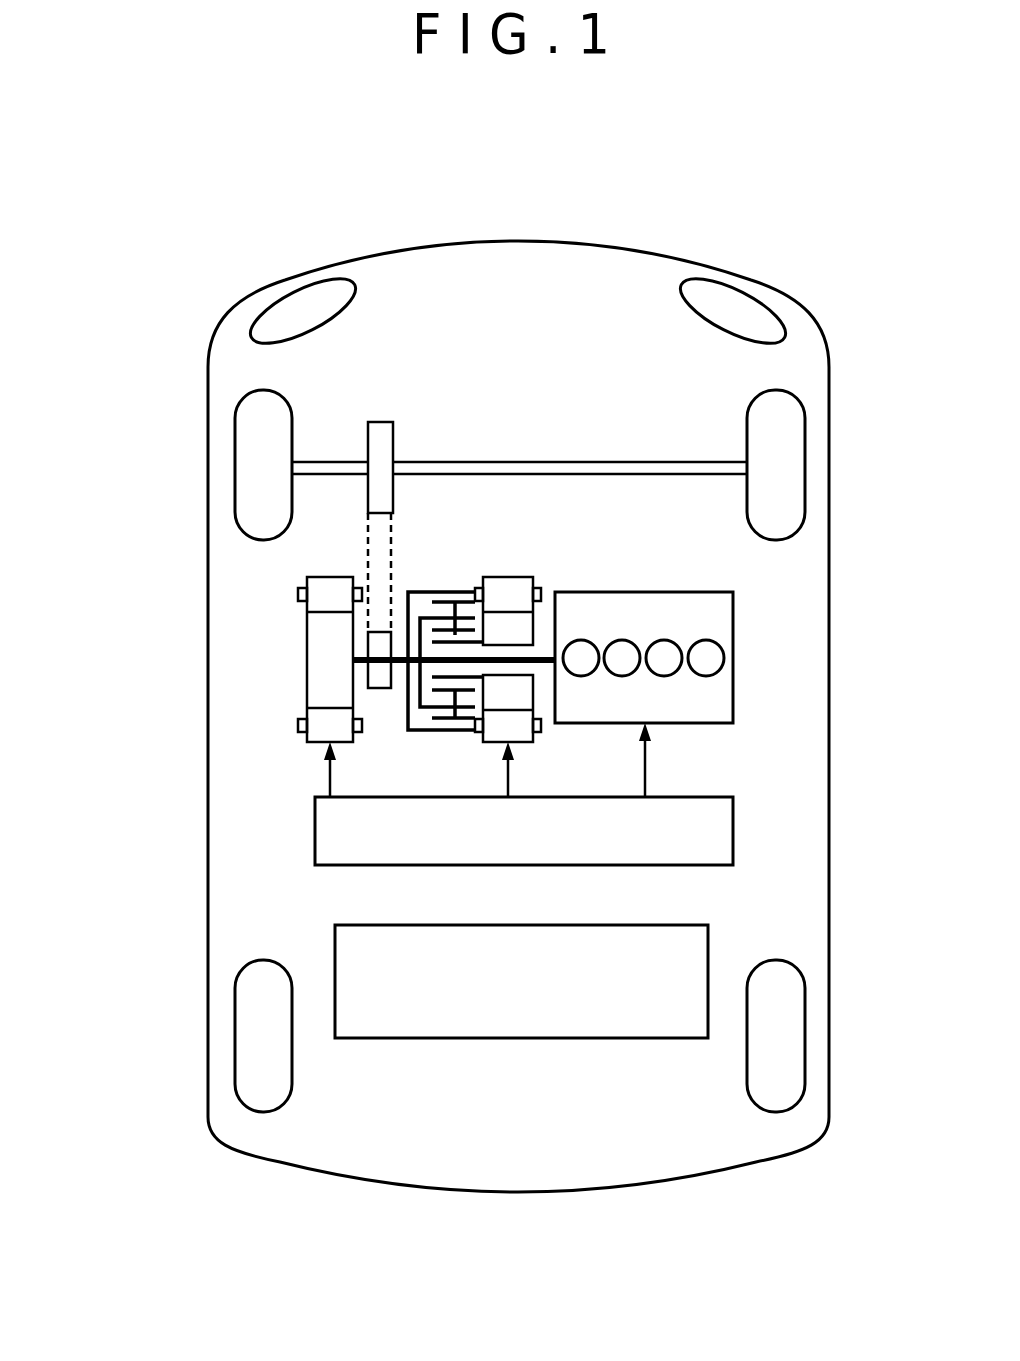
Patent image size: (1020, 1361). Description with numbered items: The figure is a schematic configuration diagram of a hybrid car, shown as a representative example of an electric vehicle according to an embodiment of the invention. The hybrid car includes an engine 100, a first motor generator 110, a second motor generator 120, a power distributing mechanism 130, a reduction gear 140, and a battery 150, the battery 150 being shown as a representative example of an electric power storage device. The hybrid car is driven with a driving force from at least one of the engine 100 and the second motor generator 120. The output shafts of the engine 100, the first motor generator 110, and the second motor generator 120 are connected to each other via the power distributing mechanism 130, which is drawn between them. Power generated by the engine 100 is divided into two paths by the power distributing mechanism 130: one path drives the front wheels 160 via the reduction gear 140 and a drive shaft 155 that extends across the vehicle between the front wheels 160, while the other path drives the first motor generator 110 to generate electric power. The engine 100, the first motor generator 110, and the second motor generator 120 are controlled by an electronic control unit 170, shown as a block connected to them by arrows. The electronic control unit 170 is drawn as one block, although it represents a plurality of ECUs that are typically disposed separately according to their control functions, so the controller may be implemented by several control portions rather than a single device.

The engine 100 is at (595, 592).
The first motor generator 110 is at (513, 577).
The second motor generator 120 is at (307, 656).
The power distributing mechanism 130 is at (438, 590).
The reduction gear 140 is at (383, 392).
The battery 150 is at (570, 1038).
The drive shaft 155 is at (493, 462).
The front wheels 160 is at (235, 470).
The electronic control unit 170 is at (315, 832).